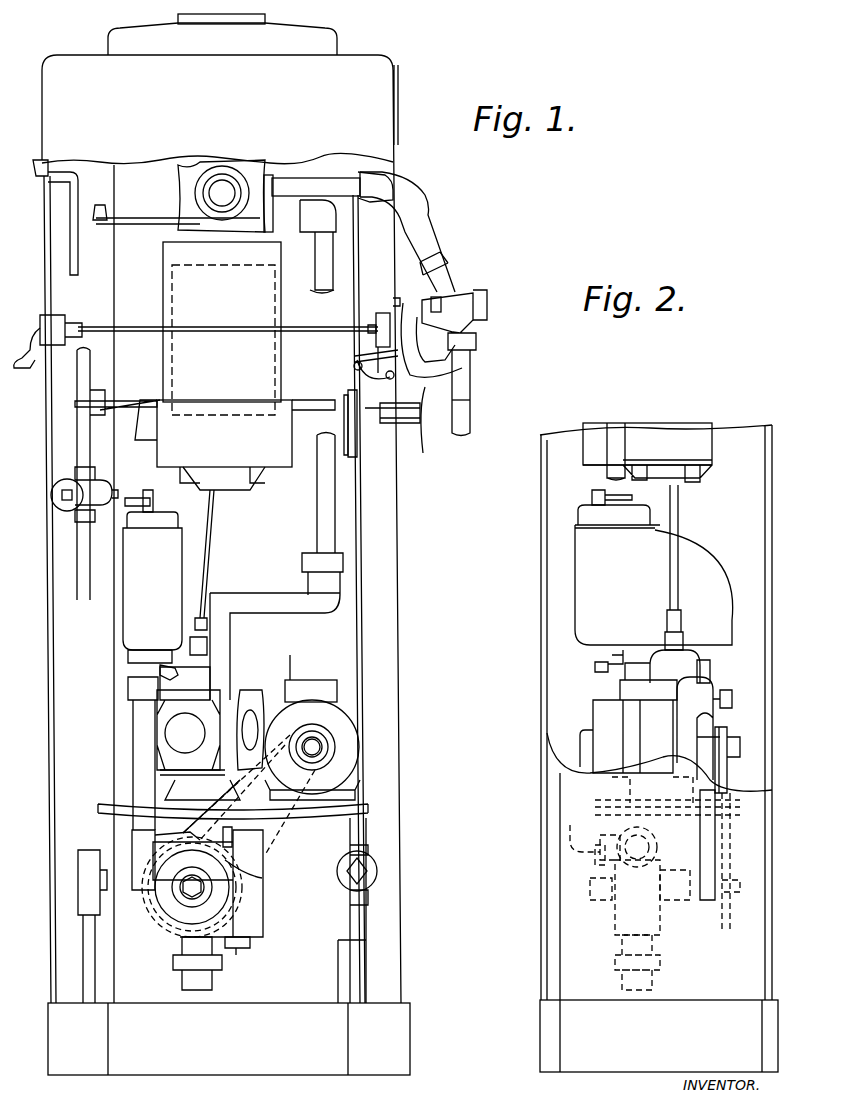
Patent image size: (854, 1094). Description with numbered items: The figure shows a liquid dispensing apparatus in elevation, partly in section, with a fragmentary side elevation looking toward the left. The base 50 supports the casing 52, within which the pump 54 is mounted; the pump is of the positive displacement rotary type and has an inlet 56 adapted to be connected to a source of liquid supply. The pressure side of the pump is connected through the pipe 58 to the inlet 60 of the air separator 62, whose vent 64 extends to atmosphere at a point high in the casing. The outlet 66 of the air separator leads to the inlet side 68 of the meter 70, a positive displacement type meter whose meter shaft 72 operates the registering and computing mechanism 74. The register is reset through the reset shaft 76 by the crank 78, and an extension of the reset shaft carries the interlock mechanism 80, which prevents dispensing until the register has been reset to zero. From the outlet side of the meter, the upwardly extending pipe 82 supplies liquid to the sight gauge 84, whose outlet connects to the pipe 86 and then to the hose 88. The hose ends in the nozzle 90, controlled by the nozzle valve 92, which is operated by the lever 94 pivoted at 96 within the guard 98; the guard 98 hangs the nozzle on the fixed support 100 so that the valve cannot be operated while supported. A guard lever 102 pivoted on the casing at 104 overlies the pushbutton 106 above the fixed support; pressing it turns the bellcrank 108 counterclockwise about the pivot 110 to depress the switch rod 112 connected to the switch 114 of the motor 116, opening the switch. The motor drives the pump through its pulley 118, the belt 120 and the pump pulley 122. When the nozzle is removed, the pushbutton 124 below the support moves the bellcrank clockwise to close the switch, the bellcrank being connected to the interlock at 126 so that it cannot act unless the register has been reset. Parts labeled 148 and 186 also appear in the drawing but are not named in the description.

In FIG. 1, the base 50 is at (395, 1025).
In FIG. 1, the casing 52 is at (405, 880).
In FIG. 1, the pump 54 is at (245, 905).
In FIG. 2, the pump 54 is at (655, 915).
In FIG. 1, the inlet 56 is at (220, 964).
In FIG. 2, the inlet 56 is at (660, 980).
In FIG. 1, the pipe 58 is at (140, 772).
In FIG. 1, the inlet 60 is at (135, 660).
In FIG. 1, the air separator 62 is at (158, 556).
In FIG. 2, the air separator 62 is at (580, 568).
In FIG. 1, the vent 64 is at (78, 192).
In FIG. 2, the vent 64 is at (608, 490).
In FIG. 2, the outlet 66 is at (710, 674).
In FIG. 1, the inlet side 68 is at (200, 678).
In FIG. 2, the inlet side 68 is at (632, 705).
In FIG. 1, the meter 70 is at (245, 700).
In FIG. 1, the meter shaft 72 is at (208, 522).
In FIG. 2, the meter shaft 72 is at (680, 510).
In FIG. 1, the registering and computing mechanism 74 is at (163, 440).
In FIG. 2, the registering and computing mechanism 74 is at (695, 442).
In FIG. 1, the reset shaft 76 is at (132, 334).
In FIG. 1, the crank 78 is at (38, 322).
In FIG. 1, the interlock mechanism 80 is at (383, 312).
In FIG. 1, the upwardly extending pipe 82 is at (322, 266).
In FIG. 2, the upwardly extending pipe 82 is at (621, 440).
In FIG. 1, the sight gauge 84 is at (222, 190).
In FIG. 1, the pipe 86 is at (310, 180).
In FIG. 1, the hose 88 is at (470, 406).
In FIG. 1, the nozzle 90 is at (482, 326).
In FIG. 1, the nozzle valve 92 is at (442, 310).
In FIG. 1, the lever 94 is at (472, 335).
In FIG. 1, the pivot 96 is at (442, 300).
In FIG. 1, the guard 98 is at (428, 262).
In FIG. 1, the fixed support 100 is at (424, 386).
In FIG. 1, the guard lever 102 is at (420, 385).
In FIG. 1, the pivot 104 is at (406, 299).
In FIG. 1, the pushbutton 106 is at (418, 420).
In FIG. 1, the bellcrank 108 is at (370, 425).
In FIG. 1, the pivot 110 is at (360, 375).
In FIG. 1, the switch rod 112 is at (352, 452).
In FIG. 2, the switch 114 is at (728, 700).
In FIG. 1, the motor 116 is at (340, 750).
In FIG. 2, the motor 116 is at (720, 730).
In FIG. 1, the pulley 118 is at (320, 745).
In FIG. 2, the pulley 118 is at (735, 755).
In FIG. 1, the belt 120 is at (285, 825).
In FIG. 2, the belt 120 is at (727, 777).
In FIG. 1, the pump pulley 122 is at (158, 905).
In FIG. 2, the pump pulley 122 is at (727, 932).
In FIG. 1, the pushbutton 124 is at (423, 453).
In FIG. 1, the connection 126 is at (375, 350).
In FIG. 1, the pump bracket 148 is at (238, 882).
In FIG. 2, the pump bracket 148 is at (605, 862).
In FIG. 1, the bypass pipe 186 is at (188, 668).
In FIG. 2, the bypass pipe 186 is at (605, 672).